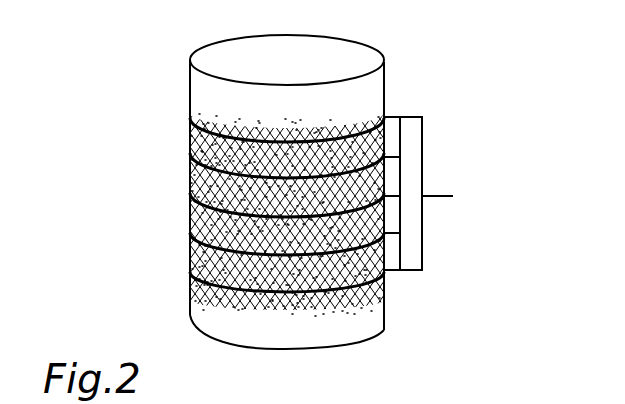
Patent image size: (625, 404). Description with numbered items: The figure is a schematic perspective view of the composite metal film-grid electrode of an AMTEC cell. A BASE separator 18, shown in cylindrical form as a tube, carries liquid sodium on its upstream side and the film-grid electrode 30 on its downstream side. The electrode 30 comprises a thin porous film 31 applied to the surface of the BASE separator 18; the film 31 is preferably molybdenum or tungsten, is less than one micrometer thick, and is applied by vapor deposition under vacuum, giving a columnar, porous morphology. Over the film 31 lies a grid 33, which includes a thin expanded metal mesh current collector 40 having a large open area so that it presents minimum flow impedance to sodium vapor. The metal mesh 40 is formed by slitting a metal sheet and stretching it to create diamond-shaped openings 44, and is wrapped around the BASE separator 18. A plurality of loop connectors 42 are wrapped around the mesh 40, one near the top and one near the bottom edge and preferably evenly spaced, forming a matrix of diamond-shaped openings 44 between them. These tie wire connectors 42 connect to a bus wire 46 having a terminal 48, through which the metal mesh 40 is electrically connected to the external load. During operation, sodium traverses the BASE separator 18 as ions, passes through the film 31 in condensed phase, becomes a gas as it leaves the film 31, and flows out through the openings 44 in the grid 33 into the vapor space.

The BASE separator 18 is at (337, 327).
The film-grid electrode 30 is at (184, 290).
The film 31 is at (243, 308).
The grid 33 is at (171, 120).
The expanded metal mesh current collector 40 is at (370, 292).
The loop connectors 42 is at (384, 100).
The diamond-shaped openings 44 is at (290, 308).
The bus wire 46 is at (412, 172).
The terminal 48 is at (440, 197).